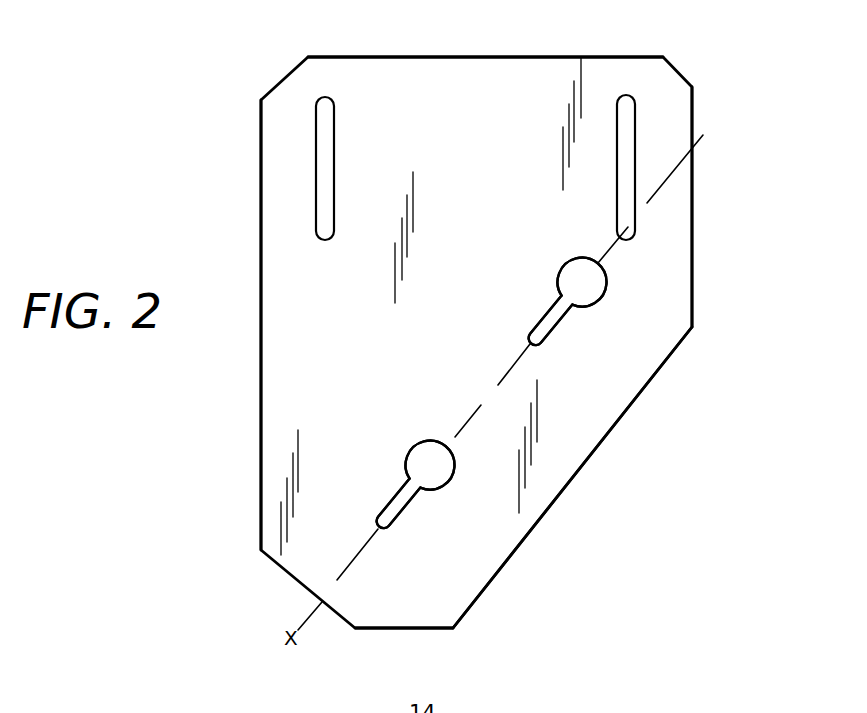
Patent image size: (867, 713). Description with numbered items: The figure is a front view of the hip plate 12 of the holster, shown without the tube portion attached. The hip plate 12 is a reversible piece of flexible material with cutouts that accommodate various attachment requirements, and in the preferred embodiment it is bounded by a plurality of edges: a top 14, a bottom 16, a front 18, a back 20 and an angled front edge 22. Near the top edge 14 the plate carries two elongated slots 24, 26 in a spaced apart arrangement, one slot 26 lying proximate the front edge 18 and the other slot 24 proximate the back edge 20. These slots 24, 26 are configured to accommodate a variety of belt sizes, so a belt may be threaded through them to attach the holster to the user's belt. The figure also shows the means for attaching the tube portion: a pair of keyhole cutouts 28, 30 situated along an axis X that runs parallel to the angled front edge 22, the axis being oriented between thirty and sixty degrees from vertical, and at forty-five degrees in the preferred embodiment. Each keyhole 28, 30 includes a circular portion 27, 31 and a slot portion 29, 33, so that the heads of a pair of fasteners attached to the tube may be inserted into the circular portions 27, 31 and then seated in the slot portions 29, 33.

The hip plate 12 is at (584, 36).
The top edge 14 is at (427, 55).
The bottom edge 16 is at (402, 632).
The front edge 18 is at (695, 200).
The back edge 20 is at (259, 232).
The angled front edge 22 is at (517, 549).
The elongated slot 24 is at (333, 135).
The elongated slot 26 is at (636, 118).
The circular portion 27 is at (607, 277).
The keyhole cutout 28 is at (545, 273).
The slot portion 29 is at (540, 346).
The keyhole cutout 30 is at (395, 462).
The circular portion 31 is at (456, 462).
The slot portion 33 is at (387, 531).